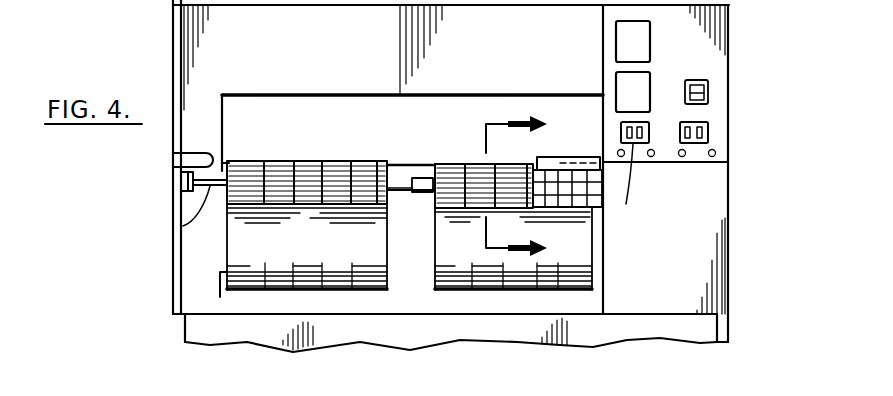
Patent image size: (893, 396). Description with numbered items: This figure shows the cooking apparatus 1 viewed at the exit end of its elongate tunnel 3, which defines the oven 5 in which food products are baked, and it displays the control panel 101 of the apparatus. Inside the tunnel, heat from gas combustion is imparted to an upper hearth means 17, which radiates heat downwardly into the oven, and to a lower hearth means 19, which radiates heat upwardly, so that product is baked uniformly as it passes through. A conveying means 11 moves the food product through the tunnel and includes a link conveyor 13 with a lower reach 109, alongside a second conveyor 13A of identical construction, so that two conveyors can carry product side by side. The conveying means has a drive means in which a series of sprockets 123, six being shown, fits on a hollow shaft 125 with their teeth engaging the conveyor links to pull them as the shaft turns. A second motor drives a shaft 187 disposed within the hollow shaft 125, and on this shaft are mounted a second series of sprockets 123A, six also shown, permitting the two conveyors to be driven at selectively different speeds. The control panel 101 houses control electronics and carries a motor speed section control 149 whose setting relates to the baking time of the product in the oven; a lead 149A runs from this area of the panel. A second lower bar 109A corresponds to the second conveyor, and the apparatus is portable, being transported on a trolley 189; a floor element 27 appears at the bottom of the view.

The cooking apparatus 1 is at (752, 229).
The elongate tunnel 3 is at (213, 129).
The oven 5 is at (356, 139).
The conveying means 11 is at (442, 304).
The link conveyor 13 is at (447, 150).
The second conveyor 13A is at (280, 150).
The upper hearth means 17 is at (258, 100).
The lower hearth means 19 is at (405, 157).
The floor/base 27 is at (130, 392).
The control panel 101 is at (723, 71).
The lower reach 109 is at (540, 292).
The left lower bar 109A is at (280, 292).
The sprockets 123 is at (448, 215).
The sprockets 123A is at (380, 212).
The hollow shaft 125 is at (428, 192).
The motor speed section control 149 is at (708, 135).
The power cord 149A is at (653, 183).
The shaft 187 is at (183, 226).
The trolley 189 is at (185, 342).